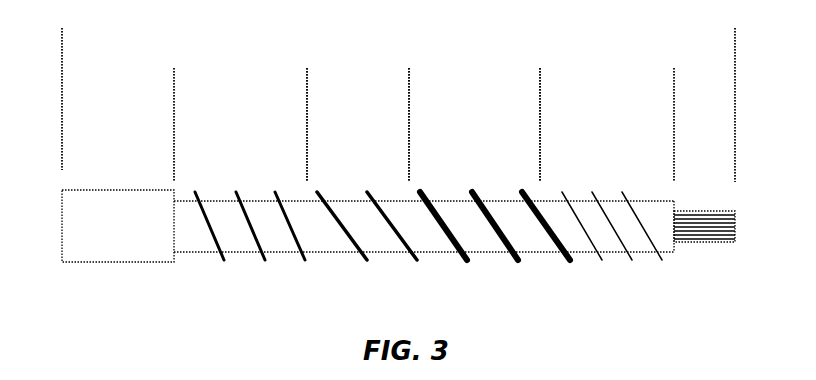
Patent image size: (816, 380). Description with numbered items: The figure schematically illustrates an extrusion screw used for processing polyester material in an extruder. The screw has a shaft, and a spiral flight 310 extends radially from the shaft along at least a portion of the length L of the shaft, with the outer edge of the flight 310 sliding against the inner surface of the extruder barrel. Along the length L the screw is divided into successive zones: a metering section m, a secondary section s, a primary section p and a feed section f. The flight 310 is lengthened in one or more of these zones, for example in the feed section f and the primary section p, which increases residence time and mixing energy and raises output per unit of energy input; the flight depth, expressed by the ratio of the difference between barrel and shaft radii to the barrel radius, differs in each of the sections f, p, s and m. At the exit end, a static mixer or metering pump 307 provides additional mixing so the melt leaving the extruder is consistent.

The static mixer or metering pump 307 is at (107, 251).
The extruder screw flight 310 is at (263, 262).
The length of the shaft L is at (724, 38).
The metering section m is at (295, 89).
The secondary section s is at (318, 89).
The primary section p is at (420, 89).
The feed section f is at (661, 89).